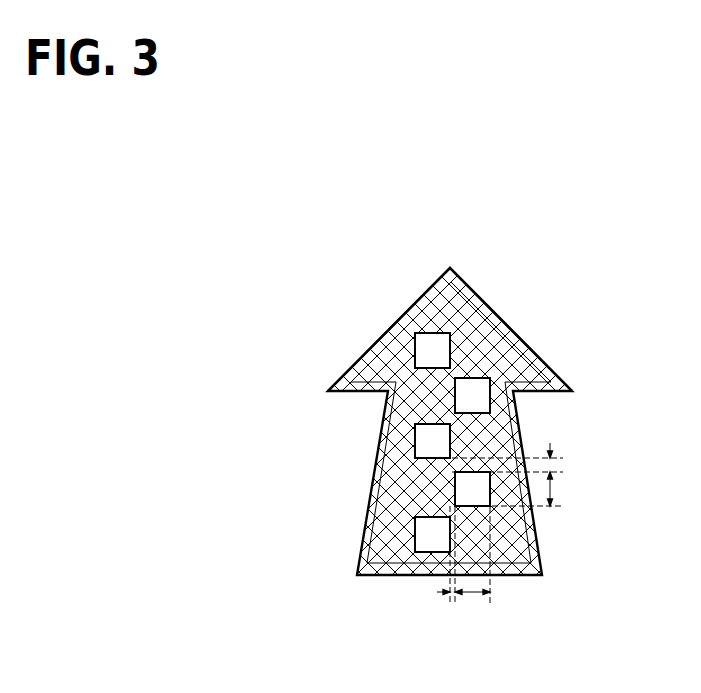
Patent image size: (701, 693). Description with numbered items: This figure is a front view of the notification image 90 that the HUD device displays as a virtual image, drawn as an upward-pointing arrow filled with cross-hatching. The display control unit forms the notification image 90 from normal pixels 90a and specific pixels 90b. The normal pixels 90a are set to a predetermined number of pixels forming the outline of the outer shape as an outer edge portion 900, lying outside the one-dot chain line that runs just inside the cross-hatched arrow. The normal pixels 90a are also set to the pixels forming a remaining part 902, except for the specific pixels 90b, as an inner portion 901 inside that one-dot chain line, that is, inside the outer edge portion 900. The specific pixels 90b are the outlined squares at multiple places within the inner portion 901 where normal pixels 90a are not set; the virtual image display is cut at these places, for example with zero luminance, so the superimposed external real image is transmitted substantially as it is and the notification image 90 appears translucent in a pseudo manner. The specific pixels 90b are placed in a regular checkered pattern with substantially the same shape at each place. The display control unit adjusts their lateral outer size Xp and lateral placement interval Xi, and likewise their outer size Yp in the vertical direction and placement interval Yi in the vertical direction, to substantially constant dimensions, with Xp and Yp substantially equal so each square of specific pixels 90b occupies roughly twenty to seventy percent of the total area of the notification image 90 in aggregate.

The notification image 90 is at (360, 423).
The normal pixels 90a is at (500, 323).
The specific pixels 90b is at (422, 349).
The outer edge portion 900 is at (530, 576).
The inner portion 901 is at (450, 487).
The remaining part 902 is at (408, 406).
The lateral placement interval Xi is at (451, 605).
The lateral outer size Xp is at (478, 601).
The placement interval in the vertical direction Yi is at (556, 469).
The outer size in the vertical direction Yp is at (556, 487).